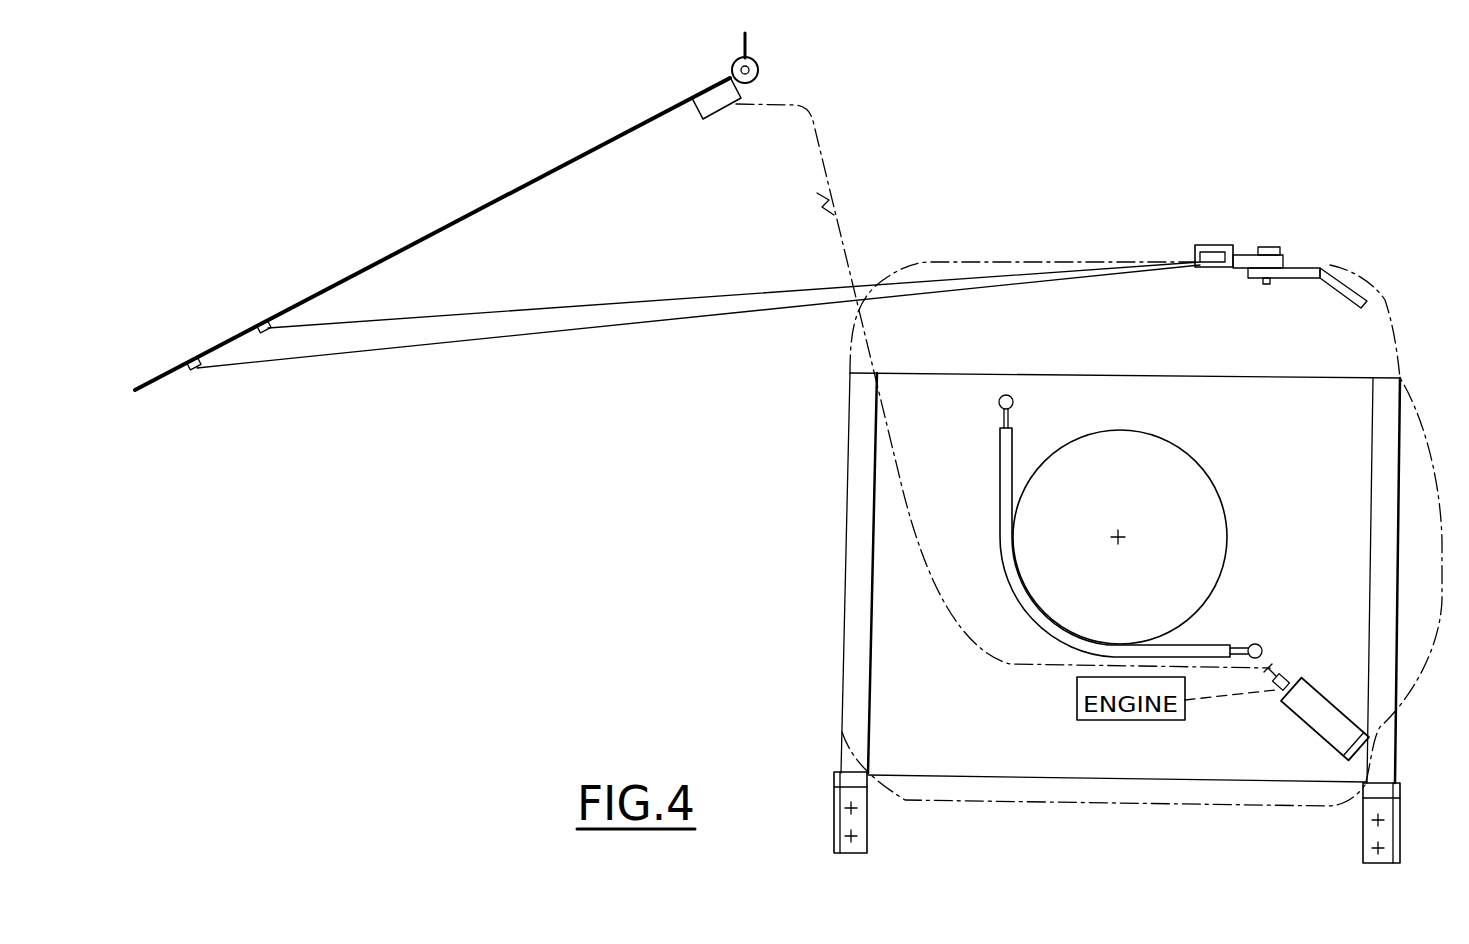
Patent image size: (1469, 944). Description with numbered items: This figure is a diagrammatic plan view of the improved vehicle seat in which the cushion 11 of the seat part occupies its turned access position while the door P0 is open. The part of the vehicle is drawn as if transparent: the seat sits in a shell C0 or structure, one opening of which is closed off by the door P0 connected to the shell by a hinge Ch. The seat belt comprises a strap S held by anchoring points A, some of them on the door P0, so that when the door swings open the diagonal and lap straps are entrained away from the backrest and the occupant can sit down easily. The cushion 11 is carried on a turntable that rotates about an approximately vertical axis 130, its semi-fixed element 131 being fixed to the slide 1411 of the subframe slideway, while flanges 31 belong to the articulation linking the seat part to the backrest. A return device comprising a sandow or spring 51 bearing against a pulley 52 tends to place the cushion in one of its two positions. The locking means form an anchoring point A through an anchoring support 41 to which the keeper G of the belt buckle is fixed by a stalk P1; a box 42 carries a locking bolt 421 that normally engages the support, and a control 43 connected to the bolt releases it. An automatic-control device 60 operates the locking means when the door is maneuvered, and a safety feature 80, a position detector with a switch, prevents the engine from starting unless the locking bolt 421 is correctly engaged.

The door P0 is at (447, 222).
The anchoring point A is at (276, 326).
The strap S is at (527, 310).
The shell C0 is at (744, 52).
The hinge Ch is at (758, 70).
The automatic-control device 60 is at (713, 103).
The control 43 is at (840, 254).
The cushion 11 is at (1034, 292).
The keeper G is at (1212, 245).
The stalk P1 is at (1253, 255).
The anchoring support 41 is at (1322, 270).
The slide 1411 is at (855, 575).
The flanges 31 is at (1400, 808).
The semi-fixed element 131 is at (1168, 763).
The sandow or spring 51 is at (1000, 448).
The pulley 52 is at (1218, 480).
The axis 130 is at (1120, 537).
The safety feature 80 is at (1292, 680).
The box 42 is at (1320, 722).
The locking bolt 421 is at (1380, 757).